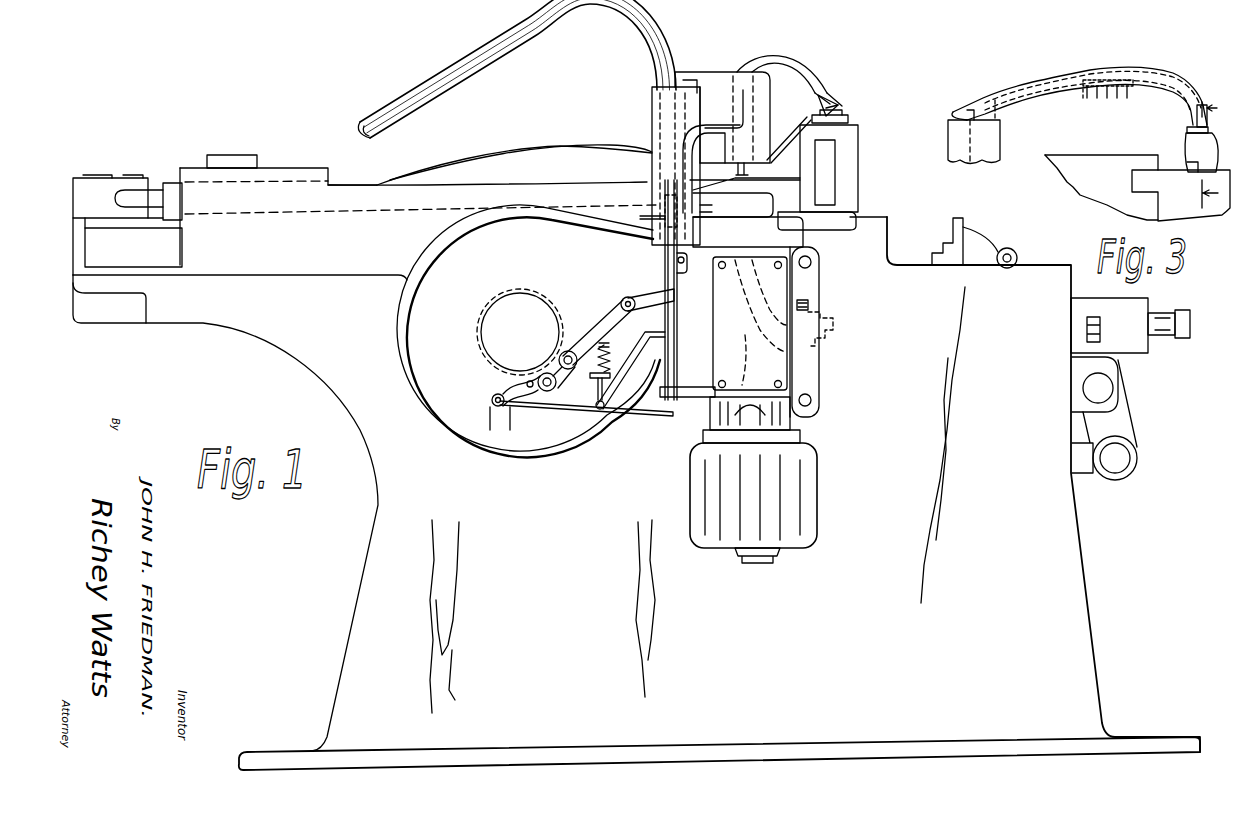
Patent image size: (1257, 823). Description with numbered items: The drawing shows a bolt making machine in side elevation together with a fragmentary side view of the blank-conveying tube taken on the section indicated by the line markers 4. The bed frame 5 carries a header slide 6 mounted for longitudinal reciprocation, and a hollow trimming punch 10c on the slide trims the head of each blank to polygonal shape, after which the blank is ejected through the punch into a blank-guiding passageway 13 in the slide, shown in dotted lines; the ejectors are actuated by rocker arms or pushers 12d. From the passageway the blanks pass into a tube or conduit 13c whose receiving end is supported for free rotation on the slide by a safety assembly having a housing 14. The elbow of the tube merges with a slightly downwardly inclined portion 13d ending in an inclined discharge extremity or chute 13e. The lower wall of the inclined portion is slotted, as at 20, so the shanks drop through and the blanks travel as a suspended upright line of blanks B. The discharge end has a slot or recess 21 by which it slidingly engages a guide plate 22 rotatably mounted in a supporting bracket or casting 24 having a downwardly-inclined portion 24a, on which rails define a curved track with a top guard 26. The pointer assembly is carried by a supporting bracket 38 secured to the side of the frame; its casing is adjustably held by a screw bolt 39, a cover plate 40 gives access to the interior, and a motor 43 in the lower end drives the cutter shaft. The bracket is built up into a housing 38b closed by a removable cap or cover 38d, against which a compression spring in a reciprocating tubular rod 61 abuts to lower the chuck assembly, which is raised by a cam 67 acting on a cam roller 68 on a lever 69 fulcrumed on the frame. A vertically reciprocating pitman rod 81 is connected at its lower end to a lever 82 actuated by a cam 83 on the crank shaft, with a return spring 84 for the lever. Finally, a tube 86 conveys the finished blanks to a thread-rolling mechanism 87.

In FIG. 1, the bed frame 5 is at (636, 457).
In FIG. 3, the bed frame 5 is at (1087, 182).
In FIG. 3, the header slide 6 is at (1195, 208).
In FIG. 3, the width dimension 4 is at (1216, 153).
In FIG. 1, the hollow trimming punch 10c is at (835, 330).
In FIG. 1, the rocker arms or pushers 12d is at (1118, 360).
In FIG. 1, the blank-guiding passageway 13 is at (750, 323).
In FIG. 3, the tube or conduit 13c is at (1170, 70).
In FIG. 1, the downwardly inclined portion 13d is at (777, 66).
In FIG. 3, the downwardly inclined portion 13d is at (1085, 68).
In FIG. 1, the inclined discharge extremity or chute 13e is at (826, 91).
In FIG. 3, the inclined discharge extremity or chute 13e is at (998, 97).
In FIG. 3, the housing 14 is at (1186, 145).
In FIG. 3, the slot 20 is at (1138, 88).
In FIG. 1, the slot or recess 21 is at (840, 97).
In FIG. 1, the guide plate 22 is at (850, 119).
In FIG. 1, the supporting bracket or casting 24 is at (858, 161).
In FIG. 1, the downwardly-inclined portion 24a is at (800, 180).
In FIG. 1, the top guard 26 is at (800, 131).
In FIG. 1, the supporting bracket 38 is at (805, 279).
In FIG. 1, the housing 38b is at (652, 116).
In FIG. 1, the removable cap or cover 38d is at (713, 72).
In FIG. 1, the screw bolt 39 is at (809, 305).
In FIG. 1, the cover plate 40 is at (792, 370).
In FIG. 1, the motor 43 is at (806, 498).
In FIG. 1, the reciprocating tubular rod 61 is at (698, 161).
In FIG. 1, the cam 67 is at (572, 350).
In FIG. 1, the cam roller 68 is at (560, 383).
In FIG. 1, the lever 69 is at (650, 293).
In FIG. 1, the pitman rod 81 is at (665, 261).
In FIG. 1, the lever 82 is at (638, 416).
In FIG. 1, the cam 83 is at (510, 379).
In FIG. 1, the return spring 84 is at (606, 351).
In FIG. 1, the tube 86 is at (549, 12).
In FIG. 1, the thread-rolling mechanism 87 is at (171, 178).
In FIG. 3, the line of blanks B is at (1085, 99).